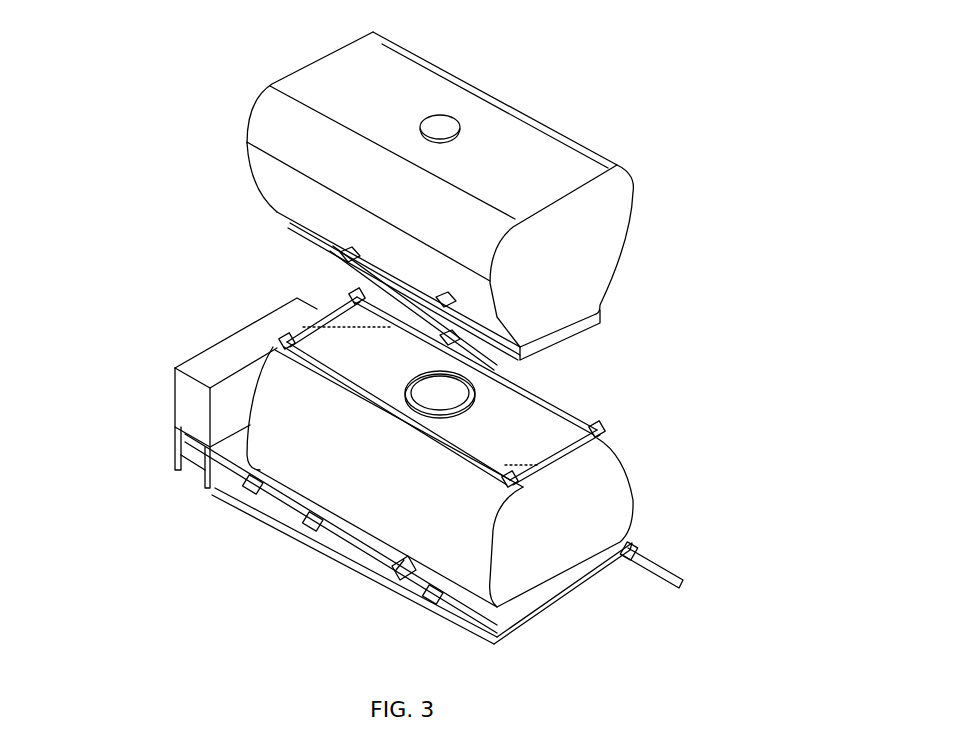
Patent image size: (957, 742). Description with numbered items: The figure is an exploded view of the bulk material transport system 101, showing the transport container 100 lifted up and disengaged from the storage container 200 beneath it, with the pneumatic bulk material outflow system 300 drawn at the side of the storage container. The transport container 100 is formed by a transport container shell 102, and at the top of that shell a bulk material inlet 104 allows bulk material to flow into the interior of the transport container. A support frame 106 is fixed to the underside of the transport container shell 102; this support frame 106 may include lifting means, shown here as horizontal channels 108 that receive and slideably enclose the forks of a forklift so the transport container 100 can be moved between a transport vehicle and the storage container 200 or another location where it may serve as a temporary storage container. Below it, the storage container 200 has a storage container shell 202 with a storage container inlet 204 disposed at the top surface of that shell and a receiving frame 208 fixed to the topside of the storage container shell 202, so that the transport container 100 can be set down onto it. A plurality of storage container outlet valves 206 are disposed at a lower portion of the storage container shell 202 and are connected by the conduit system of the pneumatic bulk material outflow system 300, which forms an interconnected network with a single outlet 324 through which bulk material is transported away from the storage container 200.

The bulk material transport system 101 is at (744, 110).
The transport container 100 is at (571, 275).
The transport container shell 102 is at (542, 180).
The bulk material inlet 104 is at (446, 125).
The support frame 106 is at (573, 323).
The horizontal channels 108 is at (443, 306).
The storage container 200 is at (580, 556).
The storage container shell 202 is at (463, 547).
The storage container inlet 204 is at (473, 395).
The storage container outlet valves 206 is at (433, 592).
The receiving frame 208 is at (278, 352).
The pneumatic bulk material outflow system 300 is at (156, 362).
The single outlet 324 is at (687, 580).